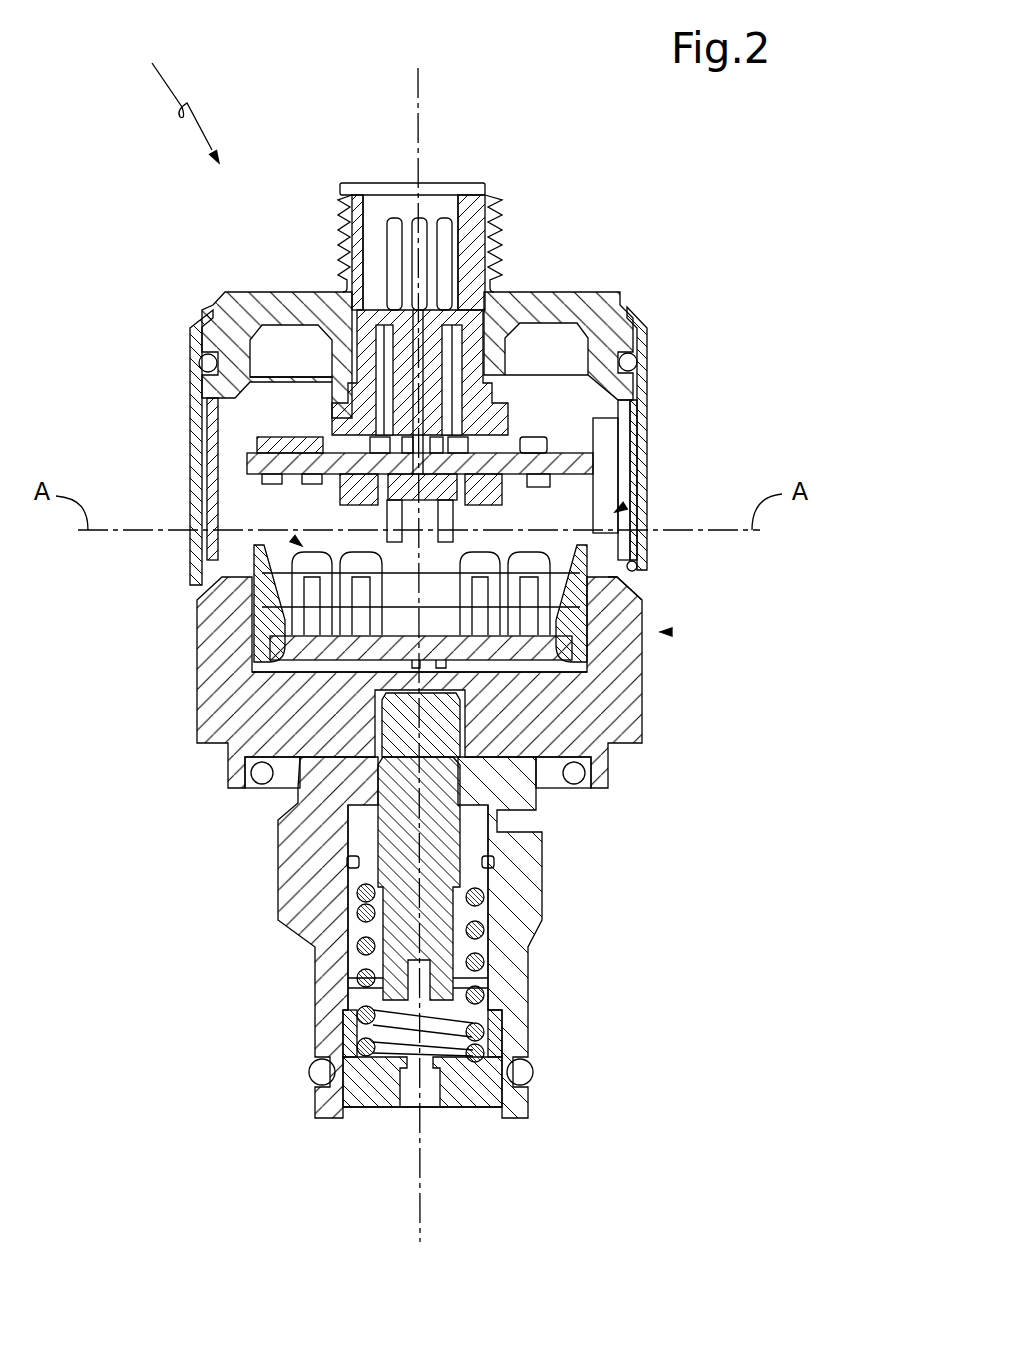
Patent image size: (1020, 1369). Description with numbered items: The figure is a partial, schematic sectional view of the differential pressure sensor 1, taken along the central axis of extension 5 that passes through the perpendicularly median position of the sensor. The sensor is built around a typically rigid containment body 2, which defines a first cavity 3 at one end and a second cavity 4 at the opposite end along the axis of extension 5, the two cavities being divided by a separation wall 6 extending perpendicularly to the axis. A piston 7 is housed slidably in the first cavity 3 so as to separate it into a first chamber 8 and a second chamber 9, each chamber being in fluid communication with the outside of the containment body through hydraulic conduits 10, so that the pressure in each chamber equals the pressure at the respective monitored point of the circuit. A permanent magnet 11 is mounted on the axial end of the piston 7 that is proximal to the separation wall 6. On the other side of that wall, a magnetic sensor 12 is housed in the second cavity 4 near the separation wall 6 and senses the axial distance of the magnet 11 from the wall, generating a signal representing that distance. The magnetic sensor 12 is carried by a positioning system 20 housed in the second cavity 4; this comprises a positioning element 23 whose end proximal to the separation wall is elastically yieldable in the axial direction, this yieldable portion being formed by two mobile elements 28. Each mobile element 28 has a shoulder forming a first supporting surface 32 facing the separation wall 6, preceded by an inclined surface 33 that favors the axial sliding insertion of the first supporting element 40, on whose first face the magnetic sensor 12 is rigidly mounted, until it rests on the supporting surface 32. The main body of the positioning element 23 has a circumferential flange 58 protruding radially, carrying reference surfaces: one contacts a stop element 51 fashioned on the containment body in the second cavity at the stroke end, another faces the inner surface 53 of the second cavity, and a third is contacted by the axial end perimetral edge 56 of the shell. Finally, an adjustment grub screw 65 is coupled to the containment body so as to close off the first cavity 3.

The differential pressure sensor 1 is at (179, 100).
The containment body 2 is at (660, 632).
The first cavity 3 is at (489, 915).
The second cavity 4 is at (600, 432).
The axis of extension 5 is at (420, 1173).
The separation wall 6 is at (390, 645).
The piston 7 is at (400, 863).
The first chamber 8 is at (360, 822).
The second chamber 9 is at (487, 947).
The hydraulic conduits 10 is at (527, 821).
The permanent magnet 11 is at (576, 770).
The magnetic sensor 12 is at (410, 683).
The positioning system 20 is at (615, 512).
The positioning element 23 is at (302, 546).
The mobile element 28 is at (268, 610).
The first supporting surface 32 is at (568, 648).
The inclined surface 33 is at (624, 492).
The first supporting element 40 is at (543, 650).
The stop element 51 is at (634, 564).
The inner surface 53 is at (637, 386).
The axial end perimetral edge 56 is at (205, 575).
The circumferential flange 58 is at (632, 578).
The adjustment grub screw 65 is at (477, 1080).